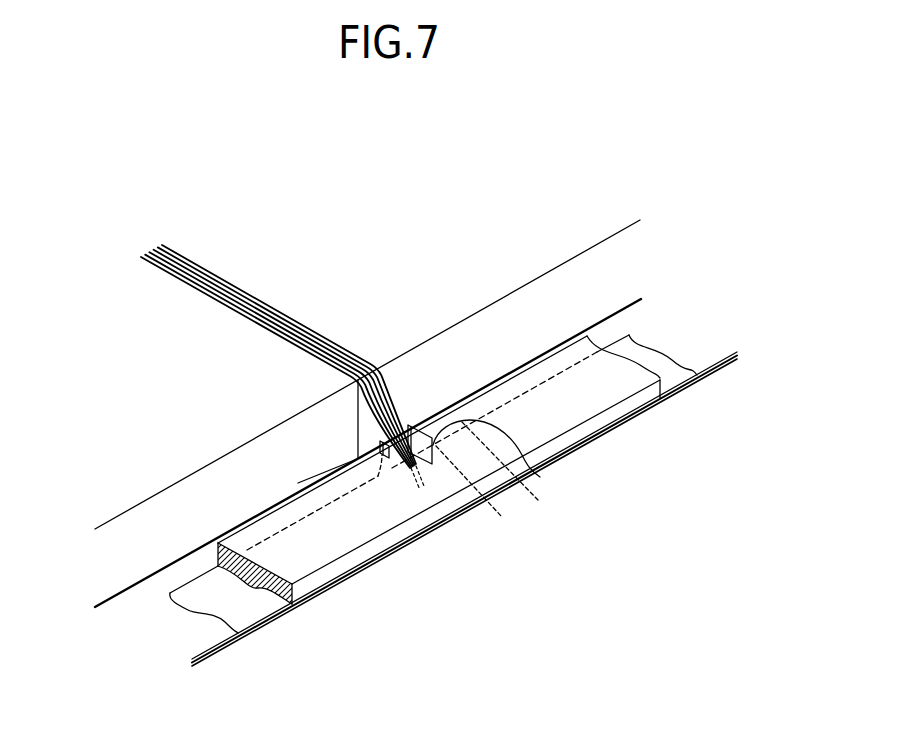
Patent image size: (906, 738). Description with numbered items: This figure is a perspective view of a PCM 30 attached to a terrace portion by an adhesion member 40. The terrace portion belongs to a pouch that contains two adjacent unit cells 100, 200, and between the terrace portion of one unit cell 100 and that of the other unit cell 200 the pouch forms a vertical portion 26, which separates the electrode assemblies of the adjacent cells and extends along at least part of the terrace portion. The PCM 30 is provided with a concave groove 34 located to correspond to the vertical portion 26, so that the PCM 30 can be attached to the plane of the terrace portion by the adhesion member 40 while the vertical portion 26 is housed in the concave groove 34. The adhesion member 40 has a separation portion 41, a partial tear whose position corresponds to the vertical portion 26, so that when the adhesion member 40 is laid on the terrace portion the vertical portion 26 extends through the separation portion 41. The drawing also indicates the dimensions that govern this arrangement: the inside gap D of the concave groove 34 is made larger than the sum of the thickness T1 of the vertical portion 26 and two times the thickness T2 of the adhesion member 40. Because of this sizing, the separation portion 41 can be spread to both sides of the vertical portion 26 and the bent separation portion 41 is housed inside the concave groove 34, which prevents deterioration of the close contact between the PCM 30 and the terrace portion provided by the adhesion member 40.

The unit cell 100 is at (86, 362).
The unit cell 200 is at (395, 212).
The vertical portion 26 is at (320, 339).
The PCM 30 is at (327, 547).
The concave groove 34 is at (540, 477).
The adhesion member 40 is at (667, 373).
The separation portion 41 is at (386, 456).
The thickness of the vertical portion T1 is at (352, 422).
The thickness of the adhesion member T2 is at (254, 593).
The inside gap of the concave groove D is at (527, 497).